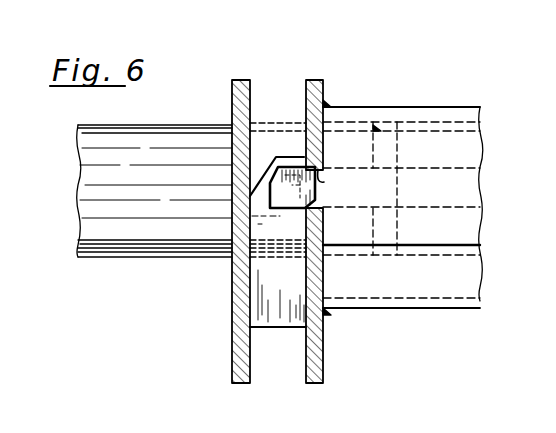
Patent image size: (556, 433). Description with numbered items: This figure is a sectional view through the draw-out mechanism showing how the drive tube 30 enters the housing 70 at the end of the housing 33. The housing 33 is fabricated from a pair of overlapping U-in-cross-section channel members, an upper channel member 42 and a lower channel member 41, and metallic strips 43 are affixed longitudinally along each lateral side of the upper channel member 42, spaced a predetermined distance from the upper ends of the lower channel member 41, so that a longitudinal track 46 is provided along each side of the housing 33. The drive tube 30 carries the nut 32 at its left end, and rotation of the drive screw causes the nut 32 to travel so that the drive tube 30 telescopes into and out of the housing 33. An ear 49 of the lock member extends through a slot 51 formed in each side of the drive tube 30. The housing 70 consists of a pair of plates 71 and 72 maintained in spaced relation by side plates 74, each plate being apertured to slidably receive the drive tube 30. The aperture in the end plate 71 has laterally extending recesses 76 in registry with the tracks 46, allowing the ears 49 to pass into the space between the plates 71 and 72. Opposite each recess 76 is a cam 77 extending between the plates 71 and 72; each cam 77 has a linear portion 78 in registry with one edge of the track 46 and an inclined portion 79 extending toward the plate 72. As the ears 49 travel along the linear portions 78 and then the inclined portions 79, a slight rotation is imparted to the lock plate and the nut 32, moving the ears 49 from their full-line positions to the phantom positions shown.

The drive tube 30 is at (118, 241).
The nut 32 is at (452, 258).
The housing 33 is at (424, 103).
The lower channel member 41 is at (460, 310).
The upper channel member 42 is at (460, 110).
The metallic strips 43 is at (446, 150).
The longitudinal track 46 is at (458, 170).
The ear 49 is at (268, 222).
The slot 51 is at (272, 199).
The housing 70 is at (308, 72).
The end plate 71 is at (315, 88).
The plate 72 is at (240, 80).
The side plates 74 is at (282, 326).
The recess 76 is at (321, 180).
The cam 77 is at (266, 150).
The linear portion 78 is at (290, 160).
The inclined portion 79 is at (258, 180).